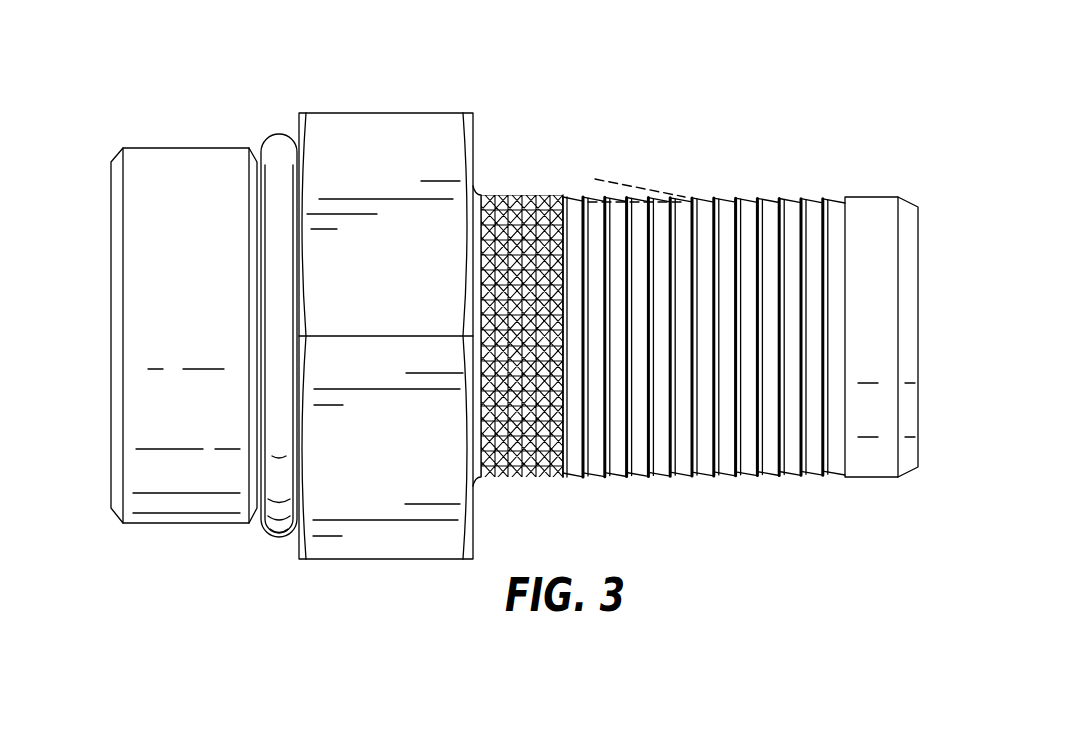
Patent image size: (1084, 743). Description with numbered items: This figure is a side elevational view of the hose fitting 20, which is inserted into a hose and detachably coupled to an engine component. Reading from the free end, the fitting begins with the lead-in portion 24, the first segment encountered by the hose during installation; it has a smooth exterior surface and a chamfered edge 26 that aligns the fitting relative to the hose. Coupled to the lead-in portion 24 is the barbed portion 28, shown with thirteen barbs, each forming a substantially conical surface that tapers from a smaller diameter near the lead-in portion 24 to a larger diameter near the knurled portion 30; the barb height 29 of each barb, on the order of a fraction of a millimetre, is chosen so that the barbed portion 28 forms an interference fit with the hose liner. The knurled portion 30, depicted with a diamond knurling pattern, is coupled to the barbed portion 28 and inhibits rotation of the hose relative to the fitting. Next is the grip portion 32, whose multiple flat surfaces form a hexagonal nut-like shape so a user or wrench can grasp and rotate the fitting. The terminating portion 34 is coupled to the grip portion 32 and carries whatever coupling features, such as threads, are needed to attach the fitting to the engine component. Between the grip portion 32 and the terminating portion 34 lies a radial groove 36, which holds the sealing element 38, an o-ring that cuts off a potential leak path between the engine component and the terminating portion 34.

The hose fitting 20 is at (146, 73).
The lead-in portion 24 is at (876, 197).
The chamfered edge 26 is at (906, 201).
The barbed portion 28 is at (748, 197).
The barb height 29 is at (626, 235).
The knurled portion 30 is at (519, 196).
The grip portion 32 is at (390, 113).
The terminating portion 34 is at (177, 148).
The radial groove 36 is at (281, 128).
The sealing element 38 is at (268, 540).